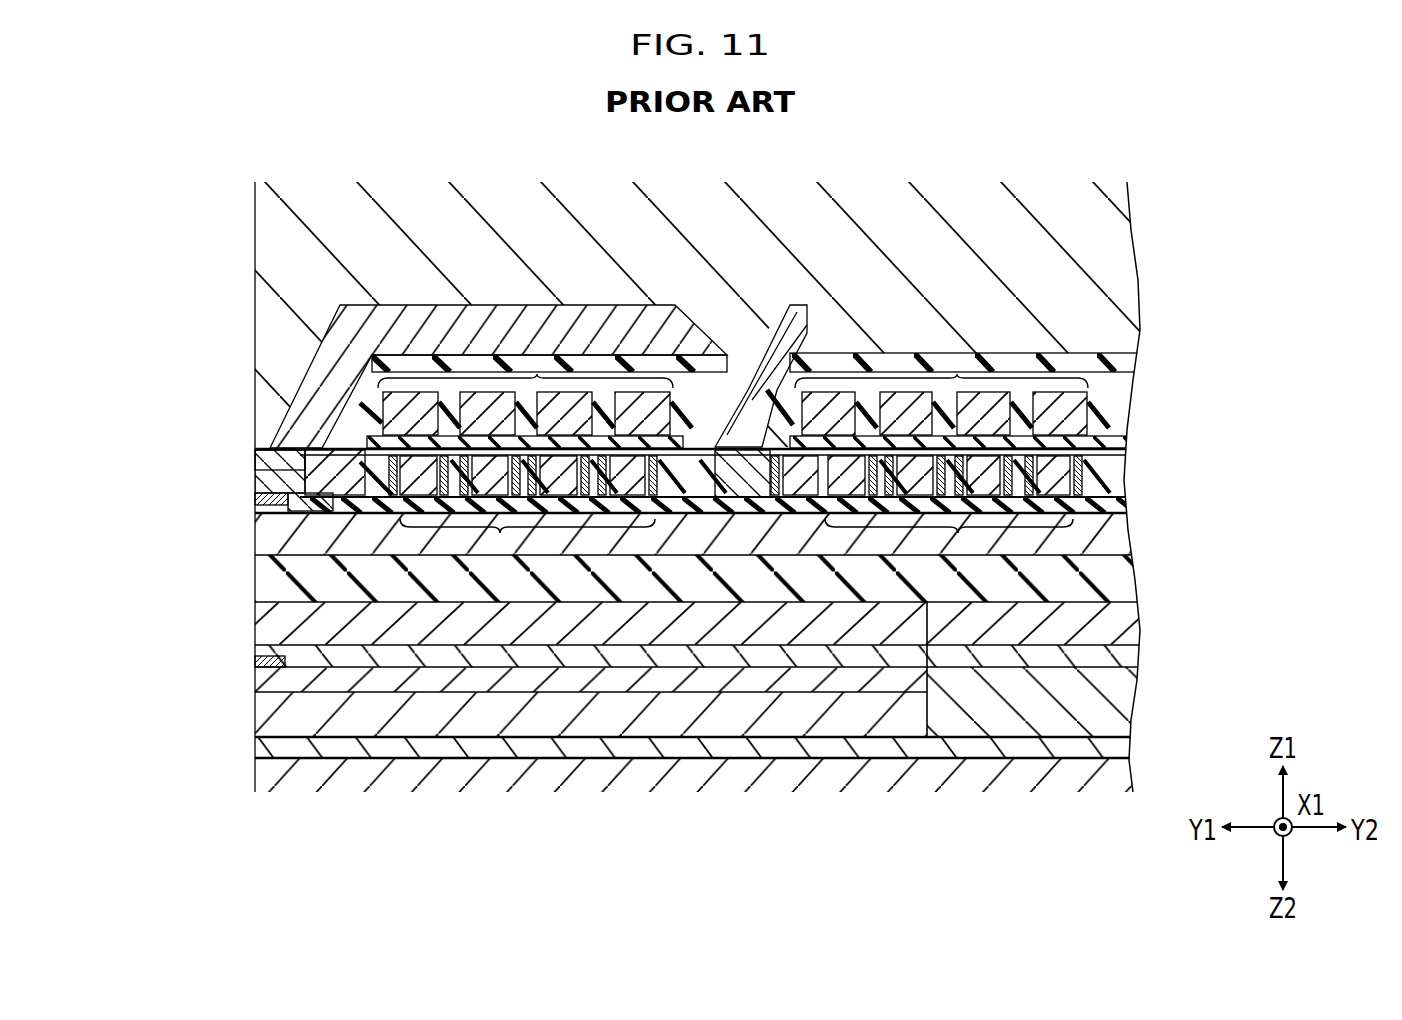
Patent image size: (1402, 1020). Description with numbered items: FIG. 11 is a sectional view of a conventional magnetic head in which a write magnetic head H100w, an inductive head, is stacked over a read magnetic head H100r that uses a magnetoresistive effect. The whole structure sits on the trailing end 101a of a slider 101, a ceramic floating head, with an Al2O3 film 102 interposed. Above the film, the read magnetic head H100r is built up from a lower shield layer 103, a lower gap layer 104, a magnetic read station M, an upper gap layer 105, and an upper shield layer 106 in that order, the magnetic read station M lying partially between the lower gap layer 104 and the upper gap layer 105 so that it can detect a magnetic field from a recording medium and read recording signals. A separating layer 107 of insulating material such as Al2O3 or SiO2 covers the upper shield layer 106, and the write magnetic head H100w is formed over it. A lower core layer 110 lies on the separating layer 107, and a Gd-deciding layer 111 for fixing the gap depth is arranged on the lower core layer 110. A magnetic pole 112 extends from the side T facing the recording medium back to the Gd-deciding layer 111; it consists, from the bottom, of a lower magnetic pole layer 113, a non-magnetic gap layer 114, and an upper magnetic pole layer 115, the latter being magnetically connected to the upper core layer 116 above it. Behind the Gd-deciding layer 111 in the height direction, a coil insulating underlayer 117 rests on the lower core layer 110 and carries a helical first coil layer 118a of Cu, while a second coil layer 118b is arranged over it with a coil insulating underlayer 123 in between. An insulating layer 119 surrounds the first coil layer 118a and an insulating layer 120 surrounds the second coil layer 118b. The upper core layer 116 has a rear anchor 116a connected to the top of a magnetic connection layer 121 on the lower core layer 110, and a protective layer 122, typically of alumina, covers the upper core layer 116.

The slider 101 is at (607, 772).
The trailing end 101a is at (557, 757).
The Al2O3 film 102 is at (640, 745).
The lower shield layer 103 is at (725, 720).
The lower gap layer 104 is at (812, 700).
The upper gap layer 105 is at (857, 658).
The upper shield layer 106 is at (258, 618).
The separating layer 107 is at (258, 580).
The lower core layer 110 is at (357, 547).
The Gd-deciding layer 111 is at (257, 515).
The magnetic pole 112 is at (158, 510).
The lower magnetic pole layer 113 is at (257, 503).
The non-magnetic gap layer 114 is at (257, 505).
The upper magnetic pole layer 115 is at (257, 470).
The upper core layer 116 is at (330, 365).
The rear anchor 116a is at (742, 368).
The coil insulating underlayer 117 is at (432, 510).
The first coil layer 118a is at (500, 534).
The second coil layer 118b is at (535, 370).
The insulating layer 119 is at (690, 505).
The insulating layer 120 is at (595, 372).
The connection layer 121 is at (745, 505).
The protective layer 122 is at (280, 230).
The coil insulating underlayer 123 is at (690, 385).
The magnetic read station M is at (258, 660).
The side facing a recording medium T is at (252, 772).
The write magnetic head H100w is at (1172, 553).
The read magnetic head H100r is at (1172, 736).